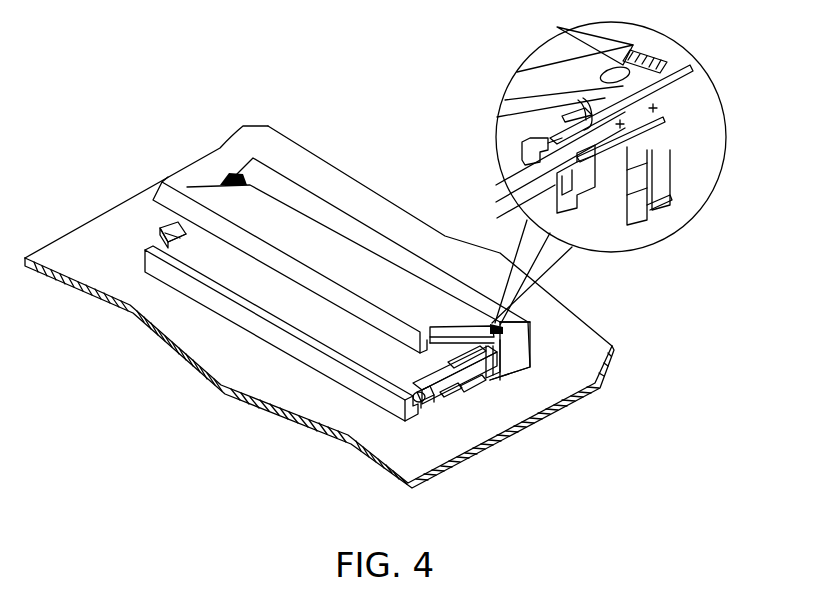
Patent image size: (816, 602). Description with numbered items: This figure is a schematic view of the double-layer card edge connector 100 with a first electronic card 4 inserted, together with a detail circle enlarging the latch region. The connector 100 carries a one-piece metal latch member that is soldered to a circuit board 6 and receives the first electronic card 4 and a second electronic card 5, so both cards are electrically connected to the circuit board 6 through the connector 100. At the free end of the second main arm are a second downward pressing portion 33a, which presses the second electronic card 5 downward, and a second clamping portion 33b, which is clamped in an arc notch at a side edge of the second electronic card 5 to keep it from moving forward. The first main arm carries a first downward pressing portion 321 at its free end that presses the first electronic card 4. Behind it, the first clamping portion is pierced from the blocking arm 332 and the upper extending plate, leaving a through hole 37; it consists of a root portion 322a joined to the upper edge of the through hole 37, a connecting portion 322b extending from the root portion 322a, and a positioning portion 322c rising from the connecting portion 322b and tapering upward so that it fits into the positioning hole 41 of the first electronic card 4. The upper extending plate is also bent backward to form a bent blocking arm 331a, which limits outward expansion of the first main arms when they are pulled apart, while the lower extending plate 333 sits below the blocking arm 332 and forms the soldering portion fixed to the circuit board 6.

The first electronic card 4 is at (188, 187).
The second electronic card 5 is at (145, 258).
The circuit board 6 is at (340, 171).
The double-layer card edge connector 100 is at (355, 215).
The second downward pressing portion 33a is at (182, 222).
The second clamping portion 33b is at (424, 406).
The positioning hole 41 is at (489, 324).
The first downward pressing portion 321 is at (533, 135).
The root portion 322a is at (655, 152).
The connecting portion 322b is at (655, 107).
The positioning portion 322c is at (590, 108).
The bent blocking arm 331a is at (498, 367).
The blocking arm 332 is at (450, 397).
The lower extending plate 333 is at (472, 393).
The through hole 37 is at (492, 385).